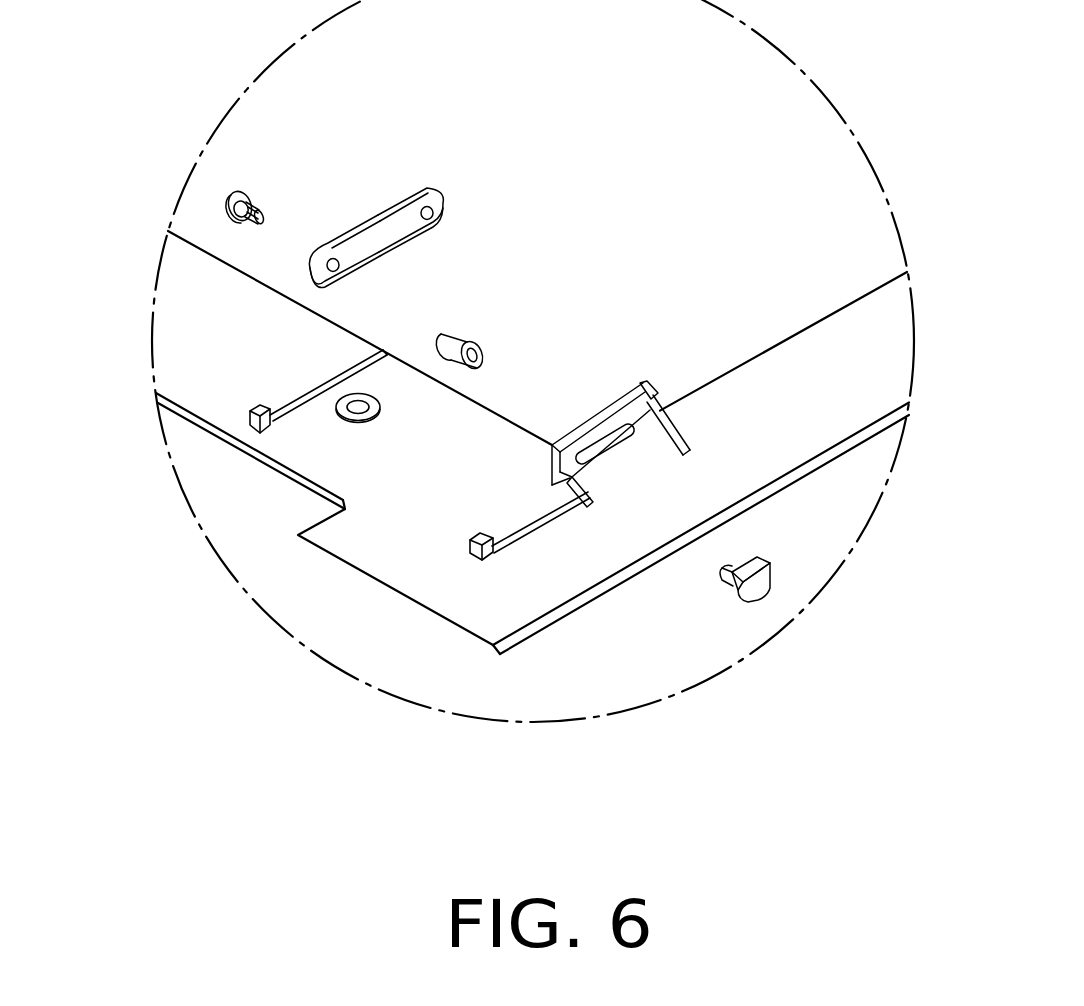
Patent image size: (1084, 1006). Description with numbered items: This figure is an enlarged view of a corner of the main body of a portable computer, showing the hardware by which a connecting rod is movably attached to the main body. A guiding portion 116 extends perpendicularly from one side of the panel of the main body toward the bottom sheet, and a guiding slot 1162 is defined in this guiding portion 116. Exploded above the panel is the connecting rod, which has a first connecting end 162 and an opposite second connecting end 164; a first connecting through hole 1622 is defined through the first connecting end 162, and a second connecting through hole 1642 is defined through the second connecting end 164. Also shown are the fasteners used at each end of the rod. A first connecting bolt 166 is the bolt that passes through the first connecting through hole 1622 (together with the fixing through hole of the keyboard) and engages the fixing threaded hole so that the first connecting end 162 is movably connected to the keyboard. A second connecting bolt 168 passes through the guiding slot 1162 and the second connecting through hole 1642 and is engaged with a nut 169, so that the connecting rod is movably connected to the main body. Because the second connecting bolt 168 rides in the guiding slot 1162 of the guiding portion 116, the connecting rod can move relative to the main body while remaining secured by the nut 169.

The guiding portion 116 is at (603, 388).
The guiding slot 1162 is at (623, 436).
The first connecting end 162 is at (442, 215).
The first connecting through hole 1622 is at (337, 268).
The second connecting end 164 is at (492, 198).
The second connecting through hole 1642 is at (432, 214).
The first connecting bolt 166 is at (228, 205).
The second connecting bolt 168 is at (757, 582).
The nut 169 is at (460, 346).